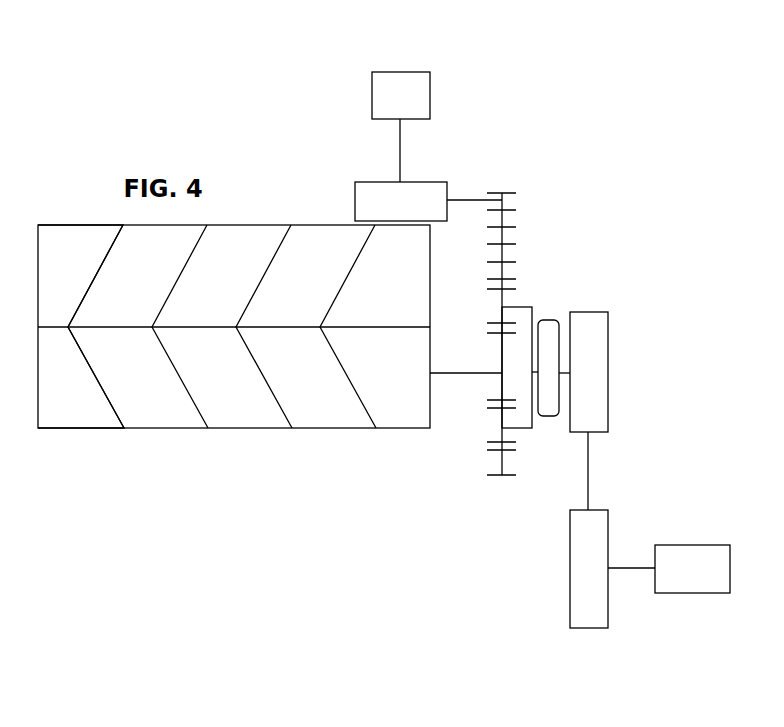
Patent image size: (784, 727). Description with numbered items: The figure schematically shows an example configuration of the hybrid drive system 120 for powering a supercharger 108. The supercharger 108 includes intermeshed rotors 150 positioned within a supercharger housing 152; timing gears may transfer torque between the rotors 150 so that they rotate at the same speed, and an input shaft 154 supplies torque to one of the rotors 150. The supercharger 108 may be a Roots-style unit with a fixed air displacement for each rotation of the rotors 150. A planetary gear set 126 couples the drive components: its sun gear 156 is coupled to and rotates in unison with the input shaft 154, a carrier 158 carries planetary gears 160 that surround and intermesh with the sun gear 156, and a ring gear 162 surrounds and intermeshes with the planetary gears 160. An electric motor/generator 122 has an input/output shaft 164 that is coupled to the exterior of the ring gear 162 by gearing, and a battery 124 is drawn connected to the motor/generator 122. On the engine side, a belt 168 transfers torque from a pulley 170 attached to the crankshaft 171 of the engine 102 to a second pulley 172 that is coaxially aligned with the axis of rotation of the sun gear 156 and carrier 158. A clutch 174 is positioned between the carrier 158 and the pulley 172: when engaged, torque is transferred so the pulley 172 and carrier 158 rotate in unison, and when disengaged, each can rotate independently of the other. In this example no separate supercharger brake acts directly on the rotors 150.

The engine 102 is at (717, 545).
The supercharger 108 is at (282, 443).
The hybrid drive system 120 is at (560, 125).
The electric motor/generator 122 is at (367, 182).
The battery 124 is at (382, 72).
The planetary gear set 126 is at (535, 278).
The rotors 150 is at (78, 245).
The supercharger housing 152 is at (252, 223).
The input shaft 154 is at (460, 374).
The sun gear 156 is at (502, 347).
The carrier 158 is at (532, 307).
The planetary gears 160 is at (502, 297).
The ring gear 162 is at (516, 227).
The input/output shaft 164 is at (469, 200).
The belt 168 is at (588, 471).
The pulley 170 is at (570, 600).
The crankshaft 171 is at (631, 569).
The pulley 172 is at (608, 360).
The clutch 174 is at (548, 320).